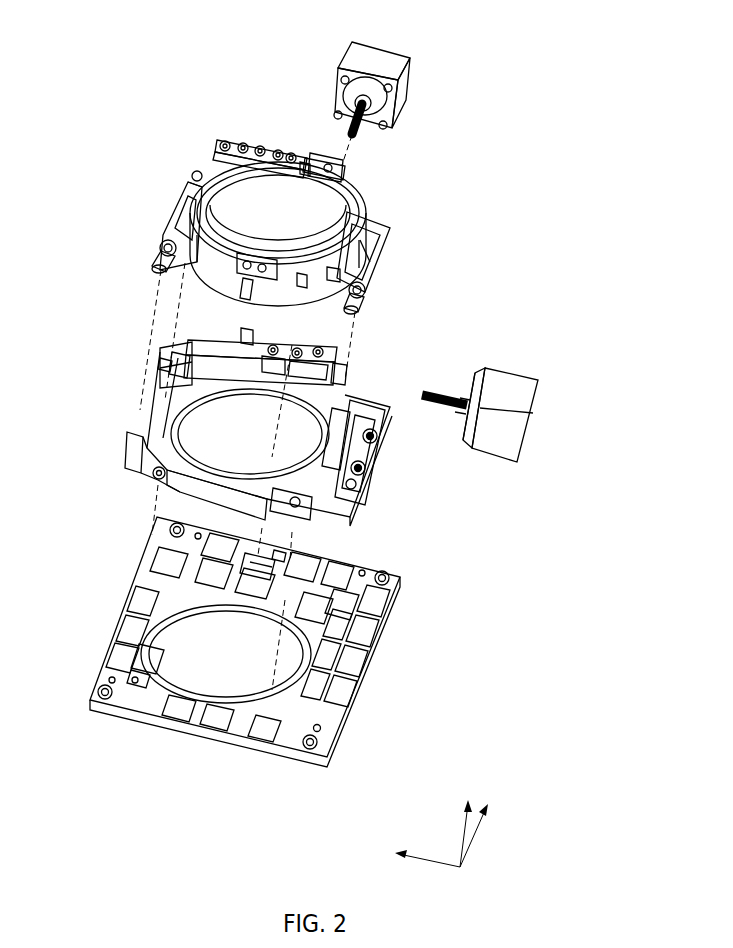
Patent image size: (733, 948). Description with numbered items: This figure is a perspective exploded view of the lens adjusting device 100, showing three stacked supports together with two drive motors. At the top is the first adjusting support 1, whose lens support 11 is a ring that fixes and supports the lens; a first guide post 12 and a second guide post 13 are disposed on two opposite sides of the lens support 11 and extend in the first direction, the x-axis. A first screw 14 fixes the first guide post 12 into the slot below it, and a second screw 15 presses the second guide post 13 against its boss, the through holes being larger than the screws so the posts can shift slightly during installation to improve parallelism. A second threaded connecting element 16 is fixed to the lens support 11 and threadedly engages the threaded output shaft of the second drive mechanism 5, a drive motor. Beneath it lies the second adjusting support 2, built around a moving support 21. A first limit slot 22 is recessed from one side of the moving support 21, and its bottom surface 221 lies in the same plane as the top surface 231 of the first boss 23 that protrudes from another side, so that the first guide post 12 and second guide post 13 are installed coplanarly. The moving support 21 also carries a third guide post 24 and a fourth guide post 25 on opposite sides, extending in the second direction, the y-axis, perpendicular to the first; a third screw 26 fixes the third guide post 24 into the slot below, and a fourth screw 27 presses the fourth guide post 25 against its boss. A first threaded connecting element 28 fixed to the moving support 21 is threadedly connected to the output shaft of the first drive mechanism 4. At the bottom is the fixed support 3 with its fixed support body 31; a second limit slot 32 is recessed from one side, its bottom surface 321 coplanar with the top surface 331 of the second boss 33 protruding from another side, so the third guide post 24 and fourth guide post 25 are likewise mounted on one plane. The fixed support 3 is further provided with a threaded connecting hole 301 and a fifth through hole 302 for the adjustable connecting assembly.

The lens adjusting device 100 is at (232, 41).
The first adjusting support 1 is at (157, 183).
The lens support 11 is at (350, 197).
The first guide post 12 is at (183, 227).
The second guide post 13 is at (388, 237).
The first screw 14 is at (160, 252).
The second screw 15 is at (388, 263).
The second threaded connecting element 16 is at (343, 163).
The first drive mechanism 4 is at (392, 63).
The second drive mechanism 5 is at (507, 390).
The second adjusting support 2 is at (127, 387).
The moving support 21 is at (177, 423).
The first limit slot 22 is at (172, 350).
The bottom surface 221 is at (163, 357).
The first boss 23 is at (367, 472).
The top surface 231 is at (377, 440).
The third guide post 24 is at (153, 480).
The fourth guide post 25 is at (333, 370).
The third screw 26 is at (157, 468).
The fourth screw 27 is at (305, 343).
The first threaded connecting element 28 is at (335, 385).
The fixed support 3 is at (117, 593).
The fixed support body 31 is at (195, 728).
The second limit slot 32 is at (117, 658).
The bottom surface 321 is at (127, 673).
The second boss 33 is at (277, 565).
The top surface 331 is at (277, 557).
The threaded connecting hole 301 is at (325, 745).
The fifth through hole 302 is at (333, 724).